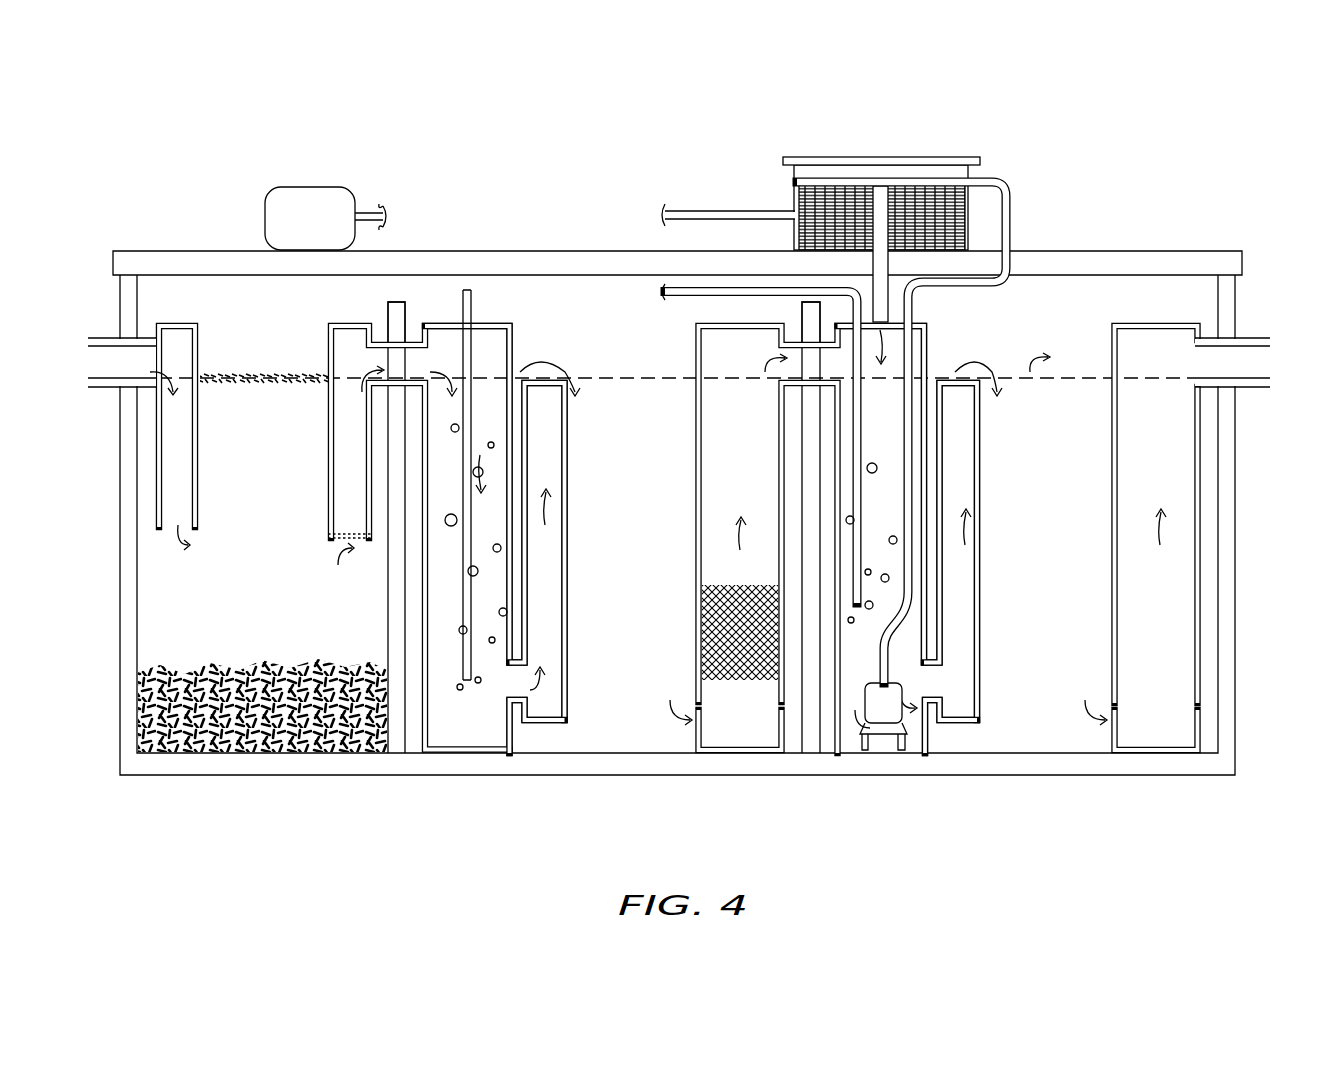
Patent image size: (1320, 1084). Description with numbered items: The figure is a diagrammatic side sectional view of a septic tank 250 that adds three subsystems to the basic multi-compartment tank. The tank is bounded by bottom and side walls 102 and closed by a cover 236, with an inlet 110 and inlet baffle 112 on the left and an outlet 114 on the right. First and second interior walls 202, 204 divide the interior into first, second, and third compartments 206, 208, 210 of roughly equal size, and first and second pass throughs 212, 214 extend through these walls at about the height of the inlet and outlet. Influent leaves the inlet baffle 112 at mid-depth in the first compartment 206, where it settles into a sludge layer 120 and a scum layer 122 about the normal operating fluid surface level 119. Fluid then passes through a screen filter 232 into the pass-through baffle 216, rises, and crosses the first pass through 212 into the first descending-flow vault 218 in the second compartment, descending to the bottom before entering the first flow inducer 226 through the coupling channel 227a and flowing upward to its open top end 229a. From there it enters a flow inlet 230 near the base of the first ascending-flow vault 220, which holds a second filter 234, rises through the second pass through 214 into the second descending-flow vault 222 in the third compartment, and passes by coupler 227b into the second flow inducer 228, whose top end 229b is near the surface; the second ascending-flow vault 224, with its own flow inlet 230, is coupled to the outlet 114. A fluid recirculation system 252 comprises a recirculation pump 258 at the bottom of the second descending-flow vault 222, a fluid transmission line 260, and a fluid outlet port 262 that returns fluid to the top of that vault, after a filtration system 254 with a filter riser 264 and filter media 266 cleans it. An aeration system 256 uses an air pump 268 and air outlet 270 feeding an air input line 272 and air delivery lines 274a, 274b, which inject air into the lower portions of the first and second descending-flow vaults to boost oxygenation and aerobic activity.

The bottom and side walls 102 is at (137, 620).
The inlet 110 is at (100, 390).
The inlet baffle 112 is at (199, 366).
The outlet 114 is at (1256, 390).
The normal operating fluid surface level 119 is at (612, 376).
The sludge layer 120 is at (165, 752).
The scum layer 122 is at (235, 398).
The first interior wall 202 is at (387, 600).
The second interior wall 204 is at (815, 722).
The first compartment 206 is at (148, 577).
The second compartment 208 is at (593, 737).
The third compartment 210 is at (1012, 740).
The first pass through 212 is at (385, 338).
The second pass through 214 is at (790, 340).
The pass-through baffle 216 is at (328, 410).
The first descending-flow vault 218 is at (512, 330).
The first ascending-flow vault 220 is at (695, 440).
The second descending-flow vault 222 is at (928, 345).
The second ascending-flow vault 224 is at (1112, 331).
The first flow inducer 226 is at (567, 482).
The coupling channel 227a is at (520, 697).
The coupler 227b is at (942, 697).
The second flow inducer 228 is at (980, 482).
The top end of first flow inducer 229a is at (538, 376).
The top end of second flow inducer 229b is at (963, 376).
The flow inlet 230 is at (766, 745).
The screen filter 232 is at (328, 526).
The second filter 234 is at (702, 620).
The cover 236 is at (1146, 251).
The septic tank 250 is at (1157, 101).
The fluid recirculation system 252 is at (1027, 181).
The filtration system 254 is at (827, 161).
The aeration system 256 is at (268, 160).
The recirculation pump 258 is at (884, 734).
The fluid transmission line 260 is at (1012, 200).
The fluid outlet port 262 is at (915, 286).
The filter riser 264 is at (903, 157).
The filter media 266 is at (797, 183).
The air pump 268 is at (265, 208).
The air outlet 270 is at (386, 214).
The air input line 272 is at (662, 210).
The air delivery line 274a is at (470, 290).
The air delivery line 274b is at (665, 298).